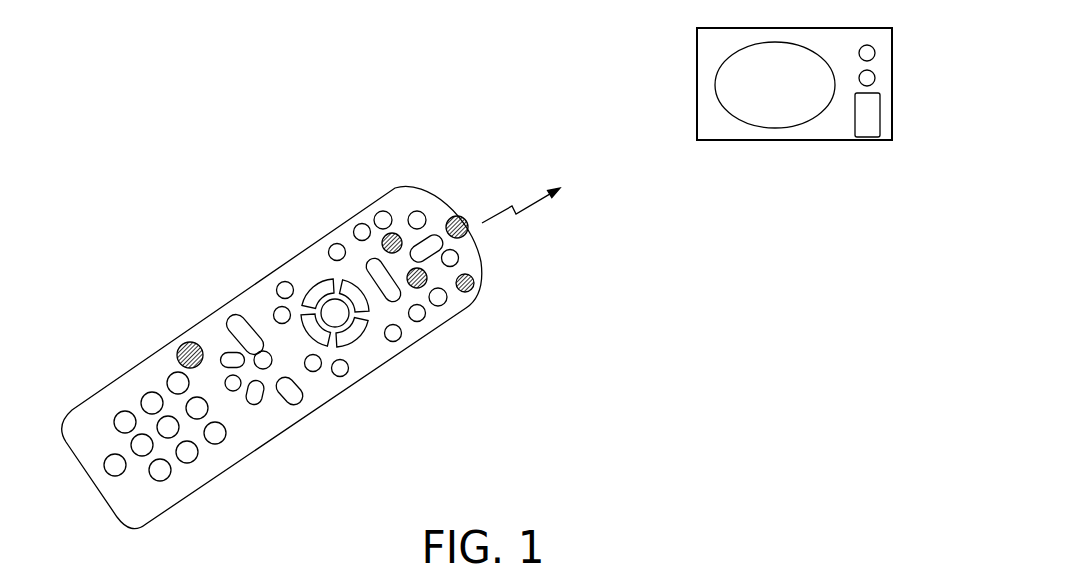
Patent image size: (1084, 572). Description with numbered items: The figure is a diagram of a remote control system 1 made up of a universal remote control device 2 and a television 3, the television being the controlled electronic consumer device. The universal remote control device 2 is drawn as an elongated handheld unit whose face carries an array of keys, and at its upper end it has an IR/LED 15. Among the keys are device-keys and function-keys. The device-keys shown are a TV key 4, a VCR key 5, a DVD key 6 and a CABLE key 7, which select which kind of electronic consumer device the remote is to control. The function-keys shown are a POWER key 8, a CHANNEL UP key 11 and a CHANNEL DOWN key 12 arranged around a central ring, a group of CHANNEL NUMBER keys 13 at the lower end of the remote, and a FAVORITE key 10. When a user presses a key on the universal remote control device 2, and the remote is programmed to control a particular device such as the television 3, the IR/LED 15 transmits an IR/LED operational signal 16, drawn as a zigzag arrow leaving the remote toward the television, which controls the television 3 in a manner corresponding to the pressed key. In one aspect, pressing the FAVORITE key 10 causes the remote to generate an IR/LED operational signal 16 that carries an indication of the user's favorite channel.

The system 1 is at (215, 75).
The universal remote control device 2 is at (133, 373).
The television 3 is at (697, 58).
The TV key 4 is at (373, 197).
The VCR key 5 is at (471, 260).
The DVD key 6 is at (407, 198).
The CABLE key 7 is at (451, 314).
The POWER key 8 is at (485, 291).
The FAVORITE key 10 is at (198, 326).
The CHANNEL UP key 11 is at (372, 312).
The CHANNEL DOWN key 12 is at (304, 348).
The CHANNEL NUMBER keys 13 is at (120, 498).
The IR/LED 15 is at (457, 218).
The IR/LED operational signal 16 is at (570, 216).